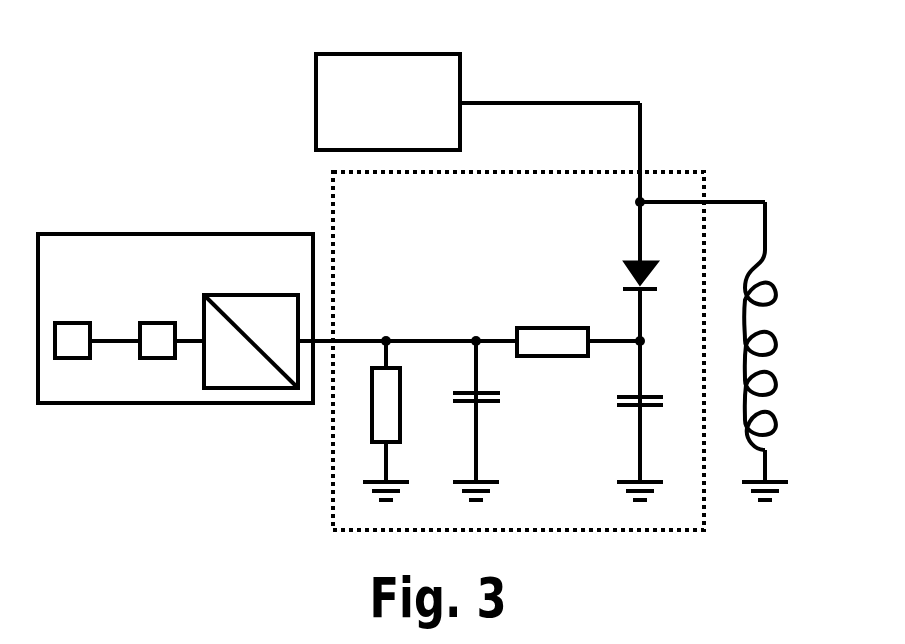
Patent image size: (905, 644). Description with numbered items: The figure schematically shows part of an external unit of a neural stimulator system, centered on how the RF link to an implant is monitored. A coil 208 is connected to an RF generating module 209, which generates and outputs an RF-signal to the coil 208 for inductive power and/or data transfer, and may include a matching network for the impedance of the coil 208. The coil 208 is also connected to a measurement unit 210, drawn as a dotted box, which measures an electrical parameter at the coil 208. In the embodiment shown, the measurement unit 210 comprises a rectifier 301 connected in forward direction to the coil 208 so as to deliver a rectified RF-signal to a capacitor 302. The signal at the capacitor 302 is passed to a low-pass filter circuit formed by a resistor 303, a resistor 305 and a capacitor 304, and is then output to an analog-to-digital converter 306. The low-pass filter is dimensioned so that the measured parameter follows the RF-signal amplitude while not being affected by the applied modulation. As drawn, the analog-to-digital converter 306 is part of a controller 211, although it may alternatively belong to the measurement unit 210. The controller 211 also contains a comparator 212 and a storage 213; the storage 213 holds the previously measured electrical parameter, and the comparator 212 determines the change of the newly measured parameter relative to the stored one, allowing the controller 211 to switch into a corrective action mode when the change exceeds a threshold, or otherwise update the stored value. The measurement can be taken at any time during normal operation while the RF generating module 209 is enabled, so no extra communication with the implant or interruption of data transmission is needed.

The coil 208 is at (767, 318).
The RF generating module 209 is at (326, 102).
The measurement unit 210 is at (333, 481).
The controller 211 is at (182, 236).
The comparator 212 is at (155, 350).
The storage 213 is at (57, 366).
The rectifier 301 is at (627, 272).
The capacitor 302 is at (636, 411).
The resistor 303 is at (537, 330).
The capacitor 304 is at (500, 400).
The resistor 305 is at (372, 432).
The analog-to-digital converter 306 is at (226, 382).